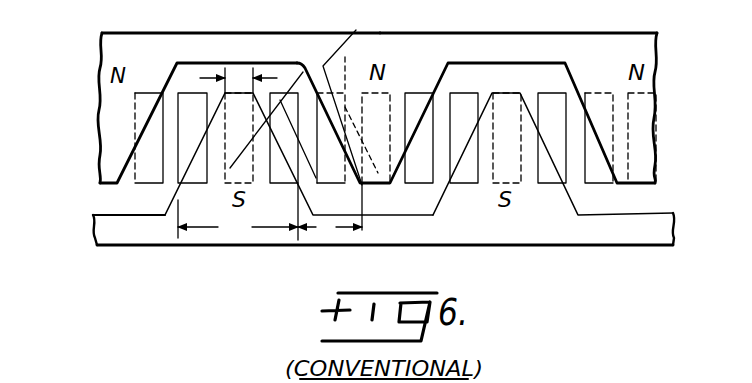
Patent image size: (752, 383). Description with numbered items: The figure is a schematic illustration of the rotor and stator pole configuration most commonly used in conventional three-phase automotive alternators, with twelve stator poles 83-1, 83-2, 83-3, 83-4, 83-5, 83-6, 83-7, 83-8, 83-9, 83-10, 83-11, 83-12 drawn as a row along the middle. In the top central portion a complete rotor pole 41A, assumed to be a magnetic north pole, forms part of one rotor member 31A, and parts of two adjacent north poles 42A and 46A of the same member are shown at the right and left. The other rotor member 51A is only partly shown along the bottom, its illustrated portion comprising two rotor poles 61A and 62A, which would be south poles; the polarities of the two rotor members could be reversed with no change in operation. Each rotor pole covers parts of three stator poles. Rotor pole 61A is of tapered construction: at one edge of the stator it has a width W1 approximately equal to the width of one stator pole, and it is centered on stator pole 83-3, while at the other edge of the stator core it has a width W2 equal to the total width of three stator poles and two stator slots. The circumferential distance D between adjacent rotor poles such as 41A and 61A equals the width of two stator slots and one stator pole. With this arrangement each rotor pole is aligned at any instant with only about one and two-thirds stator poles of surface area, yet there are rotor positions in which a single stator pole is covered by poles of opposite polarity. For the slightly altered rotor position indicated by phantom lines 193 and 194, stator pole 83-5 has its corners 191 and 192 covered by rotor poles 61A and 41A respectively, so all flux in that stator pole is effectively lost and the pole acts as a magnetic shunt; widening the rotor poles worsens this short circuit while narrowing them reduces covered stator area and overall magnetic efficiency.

The rotor member 31A is at (505, 40).
The rotor pole 41A is at (412, 70).
The rotor pole 42A is at (656, 125).
The rotor pole 46A is at (103, 118).
The rotor member 51A is at (97, 245).
The rotor pole 61A is at (208, 200).
The rotor pole 62A is at (547, 205).
The stator pole 83-1 is at (147, 152).
The stator pole 83-2 is at (190, 100).
The stator pole 83-3 is at (220, 182).
The stator pole 83-4 is at (283, 93).
The stator pole 83-5 is at (338, 168).
The stator pole 83-6 is at (396, 186).
The stator pole 83-7 is at (427, 180).
The stator pole 83-8 is at (468, 97).
The stator pole 83-9 is at (493, 92).
The stator pole 83-10 is at (557, 98).
The stator pole 83-11 is at (602, 172).
The stator pole 83-12 is at (642, 155).
The corner of stator pole 191 is at (316, 178).
The corner of stator pole 192 is at (345, 57).
The phantom line 193 is at (312, 48).
The phantom line 194 is at (356, 30).
The rotor pole width W1 is at (238, 80).
The rotor pole width W2 is at (238, 212).
The circumferential distance D is at (330, 210).